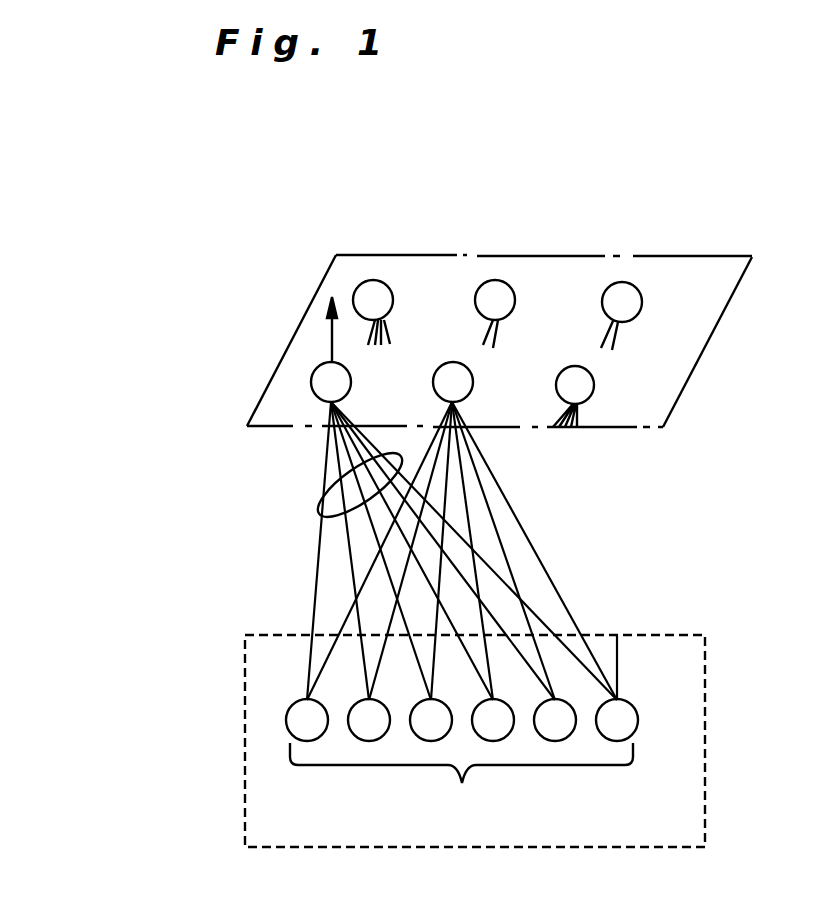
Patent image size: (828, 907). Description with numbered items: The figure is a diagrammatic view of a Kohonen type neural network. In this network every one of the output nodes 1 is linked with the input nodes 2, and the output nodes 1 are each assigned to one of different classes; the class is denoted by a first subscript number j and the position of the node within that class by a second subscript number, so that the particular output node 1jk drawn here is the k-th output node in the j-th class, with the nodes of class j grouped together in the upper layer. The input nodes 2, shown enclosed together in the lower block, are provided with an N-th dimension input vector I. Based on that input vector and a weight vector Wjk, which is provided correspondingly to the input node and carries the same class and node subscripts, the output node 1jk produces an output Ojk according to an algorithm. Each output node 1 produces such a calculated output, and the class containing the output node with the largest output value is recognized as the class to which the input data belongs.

The output nodes 1 is at (394, 300).
The output node 1jk is at (352, 382).
The class subscript j is at (537, 256).
The input nodes 2 is at (245, 740).
The output Ojk is at (249, 331).
The weight vector Wjk is at (317, 503).